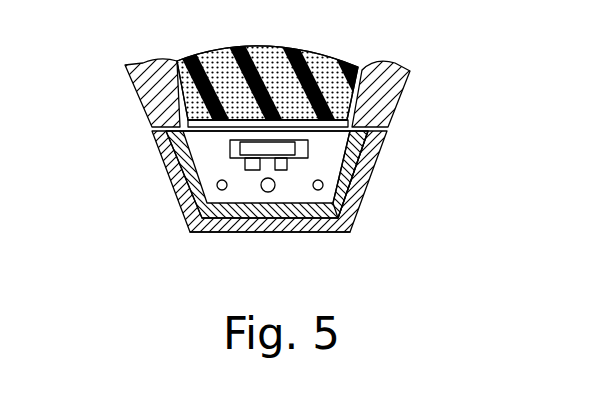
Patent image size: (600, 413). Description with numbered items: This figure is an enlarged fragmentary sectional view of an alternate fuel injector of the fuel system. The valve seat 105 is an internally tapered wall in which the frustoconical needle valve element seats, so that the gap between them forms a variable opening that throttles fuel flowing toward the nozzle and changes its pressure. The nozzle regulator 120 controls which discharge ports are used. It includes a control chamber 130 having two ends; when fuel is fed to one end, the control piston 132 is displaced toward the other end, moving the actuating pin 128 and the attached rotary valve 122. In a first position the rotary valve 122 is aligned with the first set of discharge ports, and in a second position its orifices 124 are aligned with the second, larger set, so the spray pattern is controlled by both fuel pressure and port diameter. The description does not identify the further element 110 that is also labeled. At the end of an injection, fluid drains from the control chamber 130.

The valve seat 105 is at (392, 110).
The package base 110 is at (283, 242).
The nozzle regulator 120 is at (221, 242).
The rotary valve 122 is at (188, 185).
The orifices 124 is at (345, 180).
The actuating pin 128 is at (250, 168).
The control chamber 130 is at (308, 143).
The control piston 132 is at (323, 185).